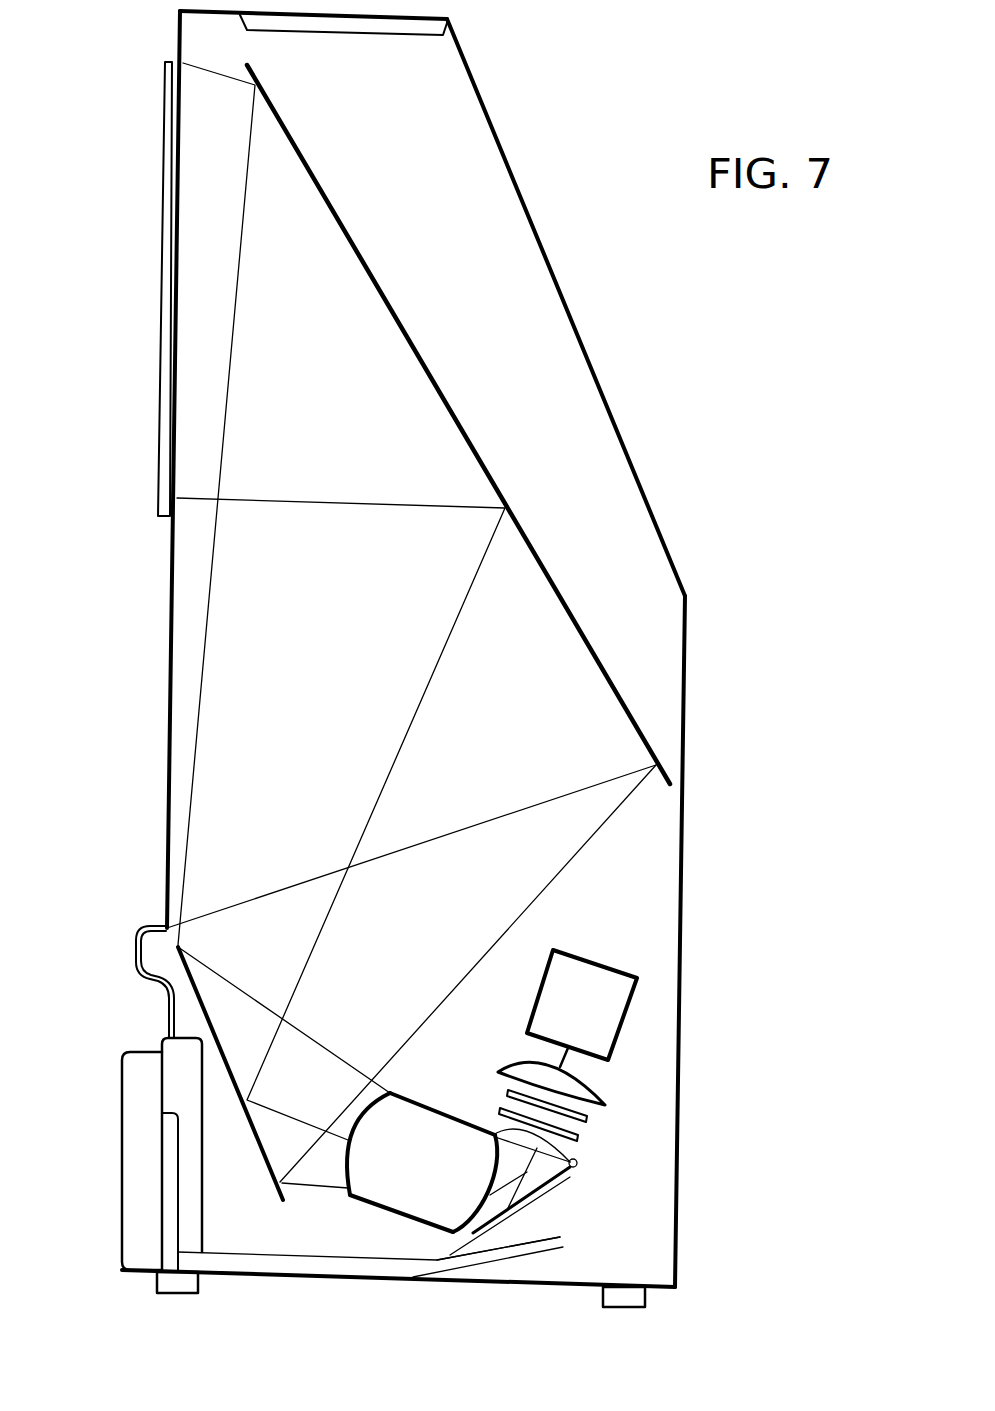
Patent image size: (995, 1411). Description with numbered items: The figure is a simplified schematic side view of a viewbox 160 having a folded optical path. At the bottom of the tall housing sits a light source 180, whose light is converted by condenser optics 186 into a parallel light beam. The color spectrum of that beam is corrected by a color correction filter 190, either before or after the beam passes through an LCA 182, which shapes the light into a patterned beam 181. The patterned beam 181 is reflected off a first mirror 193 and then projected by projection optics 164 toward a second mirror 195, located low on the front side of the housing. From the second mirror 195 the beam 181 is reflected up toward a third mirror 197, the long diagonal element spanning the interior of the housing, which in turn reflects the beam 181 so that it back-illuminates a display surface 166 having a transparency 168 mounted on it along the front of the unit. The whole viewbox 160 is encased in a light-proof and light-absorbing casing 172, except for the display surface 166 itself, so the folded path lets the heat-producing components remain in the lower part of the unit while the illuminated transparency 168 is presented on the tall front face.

The viewbox 160 is at (525, 78).
The projection optics 164 is at (397, 1210).
The display surface 166 is at (170, 708).
The transparency 168 is at (160, 313).
The casing 172 is at (607, 403).
The light source 180 is at (612, 968).
The patterned beam 181 is at (573, 1178).
The LCA 182 is at (590, 1140).
The condenser optics 186 is at (587, 1085).
The color correction filter 190 is at (580, 1115).
The first mirror 193 is at (562, 1240).
The second mirror 195 is at (193, 992).
The third mirror 197 is at (337, 213).